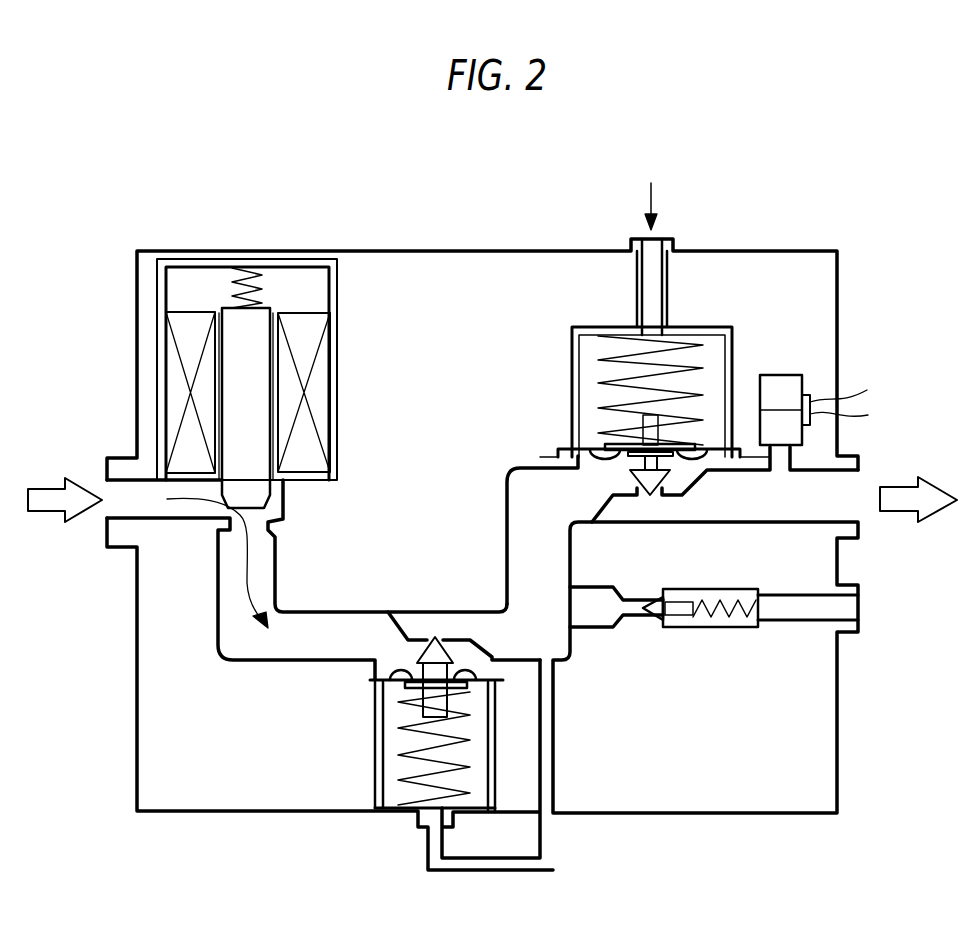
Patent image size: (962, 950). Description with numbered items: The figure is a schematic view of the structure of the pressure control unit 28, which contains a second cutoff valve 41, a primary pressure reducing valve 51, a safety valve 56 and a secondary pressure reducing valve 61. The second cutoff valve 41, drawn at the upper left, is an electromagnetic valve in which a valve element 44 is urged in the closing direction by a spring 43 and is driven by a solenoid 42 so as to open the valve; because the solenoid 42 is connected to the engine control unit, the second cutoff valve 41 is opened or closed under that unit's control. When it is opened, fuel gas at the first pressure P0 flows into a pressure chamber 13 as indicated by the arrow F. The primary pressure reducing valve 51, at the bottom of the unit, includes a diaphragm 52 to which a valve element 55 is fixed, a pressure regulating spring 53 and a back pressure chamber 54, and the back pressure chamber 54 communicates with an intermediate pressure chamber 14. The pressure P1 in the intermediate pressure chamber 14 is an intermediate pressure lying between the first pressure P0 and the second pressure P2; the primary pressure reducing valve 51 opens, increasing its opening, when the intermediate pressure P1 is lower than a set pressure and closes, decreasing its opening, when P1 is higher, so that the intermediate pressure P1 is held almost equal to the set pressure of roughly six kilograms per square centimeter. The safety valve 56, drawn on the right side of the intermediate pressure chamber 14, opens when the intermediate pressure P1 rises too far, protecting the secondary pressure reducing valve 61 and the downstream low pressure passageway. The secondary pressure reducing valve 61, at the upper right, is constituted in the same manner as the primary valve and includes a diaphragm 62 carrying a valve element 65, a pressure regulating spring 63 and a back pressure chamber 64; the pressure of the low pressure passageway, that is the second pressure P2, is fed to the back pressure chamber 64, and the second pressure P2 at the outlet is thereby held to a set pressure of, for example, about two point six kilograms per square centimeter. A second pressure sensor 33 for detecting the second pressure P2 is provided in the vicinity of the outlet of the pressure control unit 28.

The pressure chamber 13 is at (253, 662).
The intermediate pressure chamber 14 is at (507, 517).
The pressure control unit 28 is at (390, 251).
The second pressure sensor 33 is at (780, 375).
The second cutoff valve 41 is at (247, 251).
The solenoid 42 is at (172, 392).
The spring 43 is at (263, 290).
The valve element 44 is at (232, 318).
The primary pressure reducing valve 51 is at (403, 833).
The diaphragm 52 is at (382, 707).
The pressure regulating spring 53 is at (403, 780).
The back pressure chamber 54 is at (477, 783).
The valve element 55 is at (433, 640).
The safety valve 56 is at (747, 628).
The secondary pressure reducing valve 61 is at (603, 307).
The diaphragm 62 is at (722, 447).
The pressure regulating spring 63 is at (675, 343).
The back pressure chamber 64 is at (592, 345).
The valve element 65 is at (652, 497).
The first pressure P0 is at (357, 637).
The intermediate pressure P1 is at (540, 637).
The second pressure P2 is at (790, 503).
The fuel gas flow arrow F is at (247, 572).